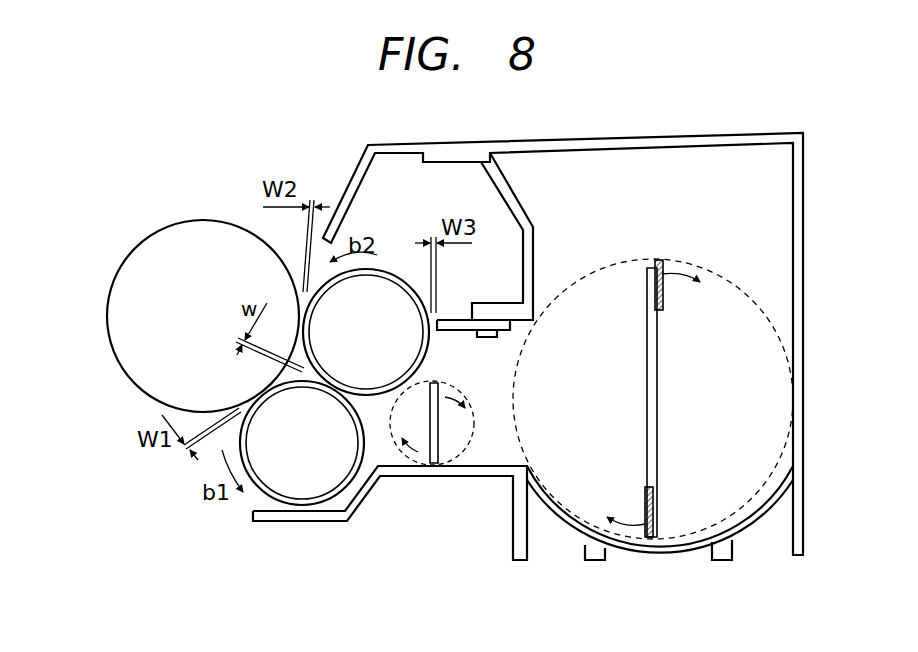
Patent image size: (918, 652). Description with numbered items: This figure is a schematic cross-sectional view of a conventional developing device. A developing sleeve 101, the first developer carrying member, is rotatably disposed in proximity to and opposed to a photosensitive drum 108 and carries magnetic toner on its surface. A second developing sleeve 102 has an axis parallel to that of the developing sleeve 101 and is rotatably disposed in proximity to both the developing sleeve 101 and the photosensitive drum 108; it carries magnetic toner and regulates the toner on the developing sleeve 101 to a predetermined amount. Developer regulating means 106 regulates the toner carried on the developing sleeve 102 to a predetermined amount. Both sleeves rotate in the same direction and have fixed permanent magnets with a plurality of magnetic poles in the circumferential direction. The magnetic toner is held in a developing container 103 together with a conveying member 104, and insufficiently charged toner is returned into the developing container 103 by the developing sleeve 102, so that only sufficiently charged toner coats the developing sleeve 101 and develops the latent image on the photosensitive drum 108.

The developing sleeve 101 is at (362, 500).
The developing sleeve 102 is at (425, 343).
The developing container 103 is at (740, 134).
The conveying member 104 is at (438, 436).
The developer regulating means 106 is at (457, 320).
The photosensitive drum 108 is at (170, 227).